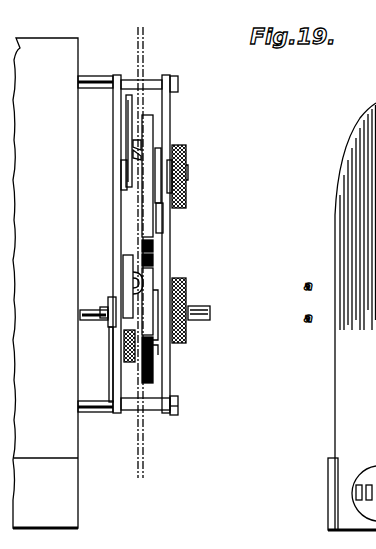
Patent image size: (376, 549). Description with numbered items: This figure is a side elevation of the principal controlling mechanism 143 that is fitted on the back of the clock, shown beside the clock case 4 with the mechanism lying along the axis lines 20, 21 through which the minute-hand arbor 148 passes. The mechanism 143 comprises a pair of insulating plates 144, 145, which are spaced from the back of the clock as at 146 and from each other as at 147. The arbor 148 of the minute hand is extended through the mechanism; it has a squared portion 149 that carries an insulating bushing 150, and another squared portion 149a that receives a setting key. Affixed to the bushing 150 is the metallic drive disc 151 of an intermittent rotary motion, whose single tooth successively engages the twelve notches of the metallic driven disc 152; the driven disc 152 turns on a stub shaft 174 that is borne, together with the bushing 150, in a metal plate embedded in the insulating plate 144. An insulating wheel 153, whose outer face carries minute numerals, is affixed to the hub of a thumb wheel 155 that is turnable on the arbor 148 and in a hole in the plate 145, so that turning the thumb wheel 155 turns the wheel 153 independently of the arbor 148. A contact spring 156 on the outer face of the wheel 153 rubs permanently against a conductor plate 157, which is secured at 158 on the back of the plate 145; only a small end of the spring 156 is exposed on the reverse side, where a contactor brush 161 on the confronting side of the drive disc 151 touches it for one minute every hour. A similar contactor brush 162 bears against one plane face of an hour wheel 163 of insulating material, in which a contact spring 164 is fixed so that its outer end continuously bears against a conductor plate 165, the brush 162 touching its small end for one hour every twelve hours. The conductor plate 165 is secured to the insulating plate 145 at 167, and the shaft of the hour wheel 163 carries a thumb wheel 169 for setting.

The wall 4 is at (28, 45).
The shaft axis 20 is at (172, 12).
The shaft axis 21 is at (136, 27).
The controlling mechanism 143 is at (180, 88).
The insulating plate 144 is at (122, 100).
The insulating plate 145 is at (148, 118).
The spacing from the back of the clock 146 is at (115, 406).
The spacing between plates 147 is at (150, 400).
The arbor of the minute hand 148 is at (82, 313).
The squared portion 149 is at (95, 322).
The squared portion 149a is at (210, 312).
The insulating bushing 150 is at (107, 325).
The drive disc 151 is at (127, 270).
The driven disc 152 is at (121, 104).
The insulating wheel 153 is at (187, 300).
The thumb wheel 155 is at (187, 288).
The contact spring 156 is at (170, 272).
The conductor plate 157 is at (155, 352).
The securing point 158 is at (170, 255).
The contactor brush 161 is at (125, 287).
The contactor brush 162 is at (148, 132).
The hour wheel 163 is at (168, 125).
The contact spring 164 is at (160, 152).
The conductor plate 165 is at (187, 157).
The securing point 167 is at (175, 203).
The thumb wheel 169 is at (187, 175).
The stub shaft 174 is at (123, 173).